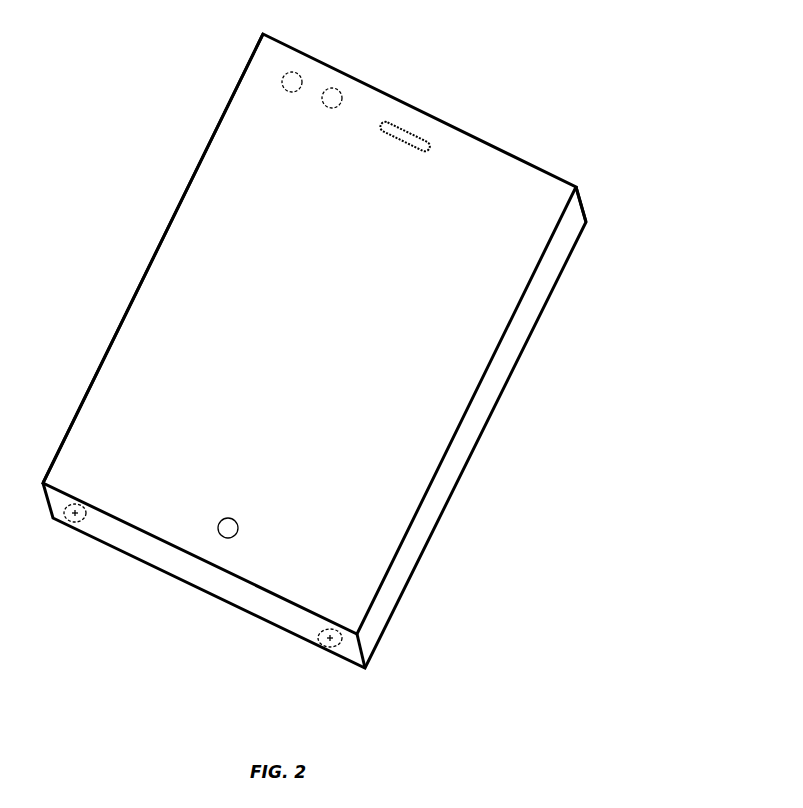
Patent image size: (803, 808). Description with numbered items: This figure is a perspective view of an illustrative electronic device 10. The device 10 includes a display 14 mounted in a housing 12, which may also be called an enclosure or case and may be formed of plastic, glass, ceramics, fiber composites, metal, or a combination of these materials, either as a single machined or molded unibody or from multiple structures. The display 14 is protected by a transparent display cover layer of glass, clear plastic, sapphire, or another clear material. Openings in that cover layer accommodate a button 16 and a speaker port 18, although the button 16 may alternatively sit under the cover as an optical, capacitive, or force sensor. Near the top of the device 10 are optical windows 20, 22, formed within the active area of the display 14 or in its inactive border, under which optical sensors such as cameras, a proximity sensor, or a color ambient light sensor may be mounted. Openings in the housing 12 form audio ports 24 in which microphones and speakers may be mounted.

The electronic device 10 is at (546, 112).
The housing 12 is at (583, 207).
The display 14 is at (155, 300).
The button 16 is at (238, 528).
The speaker port 18 is at (423, 149).
The optical window 20 is at (291, 90).
The optical window 22 is at (331, 107).
The audio port 24 is at (75, 522).